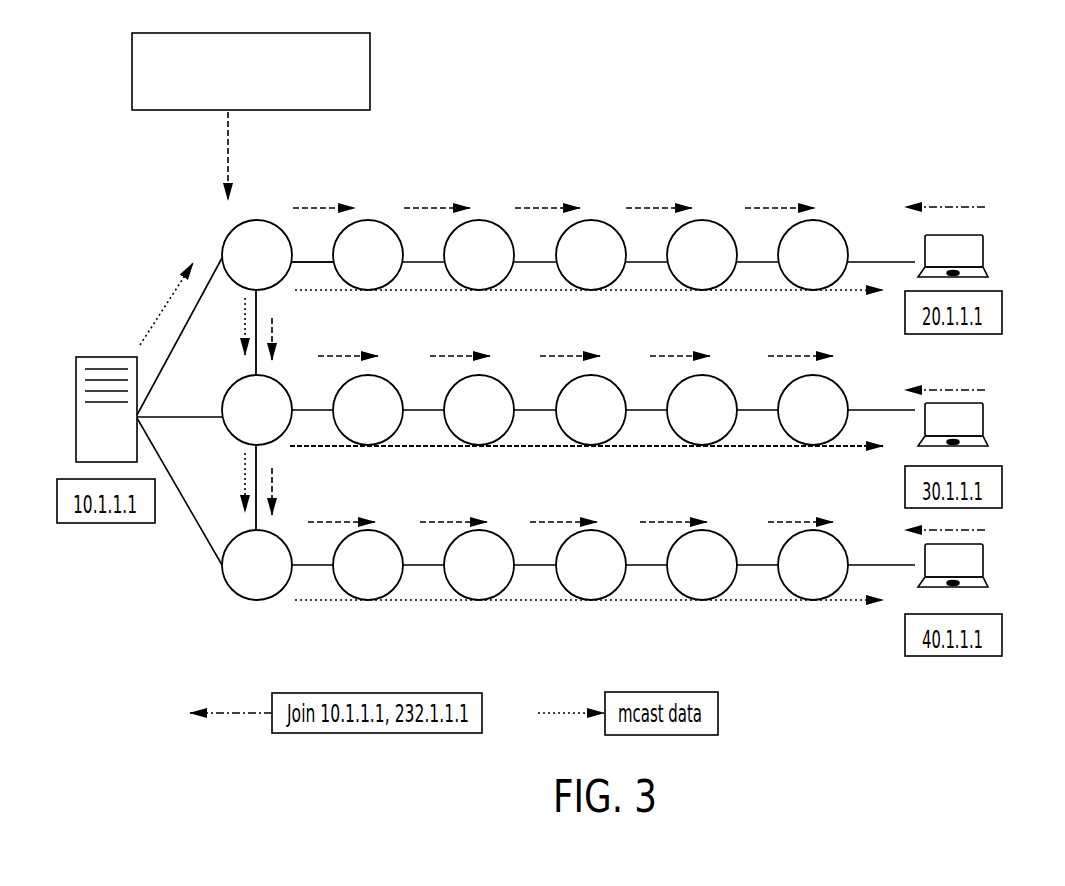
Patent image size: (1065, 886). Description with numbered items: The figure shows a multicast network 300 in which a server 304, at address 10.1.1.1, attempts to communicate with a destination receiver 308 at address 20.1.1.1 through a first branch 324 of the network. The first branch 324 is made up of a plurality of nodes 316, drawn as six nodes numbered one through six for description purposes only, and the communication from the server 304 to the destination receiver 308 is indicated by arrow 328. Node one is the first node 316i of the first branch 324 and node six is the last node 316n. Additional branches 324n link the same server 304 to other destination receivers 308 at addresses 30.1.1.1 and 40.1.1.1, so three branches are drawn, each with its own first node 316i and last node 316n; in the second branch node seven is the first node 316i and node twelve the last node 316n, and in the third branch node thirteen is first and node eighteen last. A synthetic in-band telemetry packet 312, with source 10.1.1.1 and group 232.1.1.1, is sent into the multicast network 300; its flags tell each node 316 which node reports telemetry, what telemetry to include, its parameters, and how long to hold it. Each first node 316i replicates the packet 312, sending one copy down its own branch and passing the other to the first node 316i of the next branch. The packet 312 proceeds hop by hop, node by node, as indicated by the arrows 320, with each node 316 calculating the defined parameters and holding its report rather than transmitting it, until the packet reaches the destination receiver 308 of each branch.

The multicast network 300 is at (907, 164).
The server 304 is at (120, 447).
The destination receiver 308 is at (983, 253).
The synthetic in-band telemetry packet 312 is at (372, 72).
The node 316 is at (378, 221).
The first node 316i is at (277, 287).
The last node 316n is at (803, 289).
The arrows 320 is at (323, 207).
The first branch 324 is at (318, 239).
The additional branches 324n is at (233, 450).
The arrow 328 is at (537, 291).